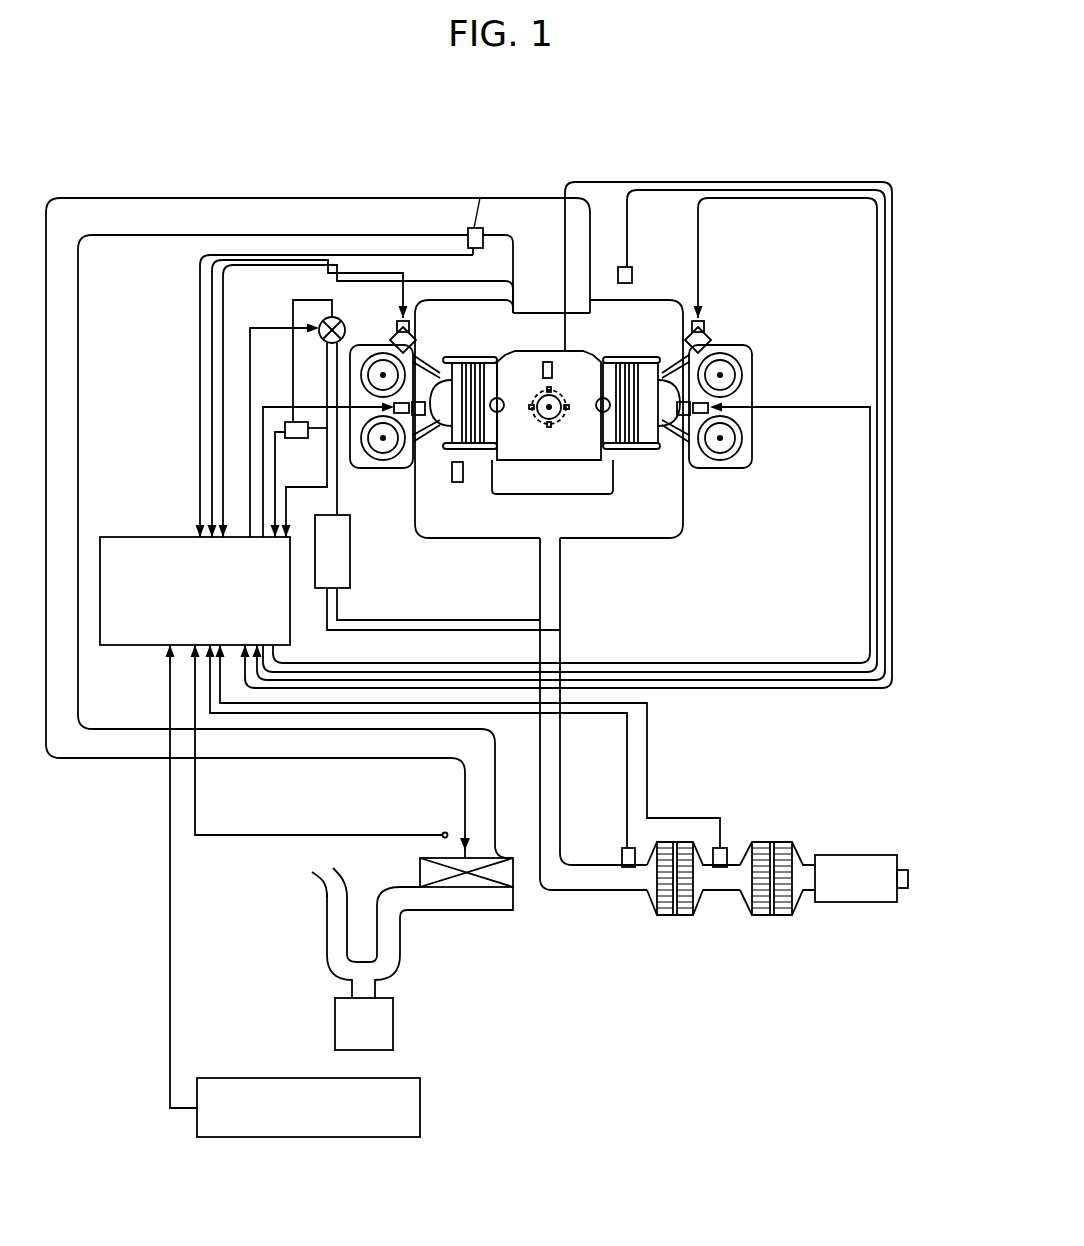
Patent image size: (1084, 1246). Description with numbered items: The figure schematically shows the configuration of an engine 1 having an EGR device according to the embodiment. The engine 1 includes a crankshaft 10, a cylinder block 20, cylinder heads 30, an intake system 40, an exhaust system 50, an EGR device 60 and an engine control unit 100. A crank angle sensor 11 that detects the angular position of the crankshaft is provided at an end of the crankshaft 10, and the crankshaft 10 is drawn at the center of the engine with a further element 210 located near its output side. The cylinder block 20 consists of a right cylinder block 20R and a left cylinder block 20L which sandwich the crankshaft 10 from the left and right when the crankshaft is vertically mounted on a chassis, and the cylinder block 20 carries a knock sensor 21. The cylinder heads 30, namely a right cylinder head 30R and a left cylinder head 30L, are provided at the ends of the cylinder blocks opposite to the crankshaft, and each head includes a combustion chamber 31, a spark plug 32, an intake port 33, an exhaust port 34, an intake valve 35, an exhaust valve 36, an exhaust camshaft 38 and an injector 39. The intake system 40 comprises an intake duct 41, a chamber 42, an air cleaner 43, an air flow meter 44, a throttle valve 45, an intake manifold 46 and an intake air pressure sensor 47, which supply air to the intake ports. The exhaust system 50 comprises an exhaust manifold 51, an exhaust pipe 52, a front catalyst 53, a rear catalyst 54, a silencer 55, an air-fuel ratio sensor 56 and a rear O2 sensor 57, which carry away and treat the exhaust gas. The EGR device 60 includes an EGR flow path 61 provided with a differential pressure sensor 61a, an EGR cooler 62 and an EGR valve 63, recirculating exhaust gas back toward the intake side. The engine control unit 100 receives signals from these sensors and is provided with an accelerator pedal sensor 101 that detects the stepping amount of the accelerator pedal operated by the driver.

The engine 1 is at (882, 155).
The crankshaft 10 is at (634, 354).
The crank angle sensor 11 is at (647, 463).
The cylinder block 20 is at (614, 354).
The right cylinder block 20R is at (487, 460).
The left cylinder block 20L is at (685, 528).
The knock sensor 21 is at (460, 480).
The output shaft 210 is at (602, 492).
The cylinder heads 30 is at (607, 328).
The right cylinder head 30R is at (493, 279).
The left cylinder head 30L is at (814, 328).
The combustion chamber 31 is at (660, 398).
The spark plug 32 is at (720, 400).
The intake port 33 is at (683, 382).
The exhaust port 34 is at (673, 442).
The intake valve 35 is at (708, 337).
The exhaust valve 36 is at (735, 452).
The exhaust camshaft 38 is at (722, 438).
The injector 39 is at (676, 362).
The intake system 40 is at (93, 183).
The intake duct 41 is at (105, 762).
The chamber 42 is at (335, 1018).
The air cleaner 43 is at (466, 848).
The air flow meter 44 is at (477, 887).
The throttle valve 45 is at (477, 213).
The intake manifold 46 is at (507, 283).
The intake air pressure sensor 47 is at (619, 269).
The exhaust system 50 is at (754, 826).
The exhaust manifold 51 is at (557, 372).
The exhaust pipe 52 is at (590, 890).
The front catalyst 53 is at (680, 913).
The rear catalyst 54 is at (777, 913).
The silencer 55 is at (857, 902).
The air-fuel ratio sensor 56 is at (628, 862).
The rear O2 sensor 57 is at (720, 861).
The EGR device 60 is at (255, 305).
The EGR flow path 61 is at (327, 382).
The differential pressure sensor 61a is at (288, 422).
The EGR cooler 62 is at (348, 560).
The EGR valve 63 is at (323, 315).
The engine control unit 100 is at (150, 538).
The accelerator pedal sensor 101 is at (418, 1092).